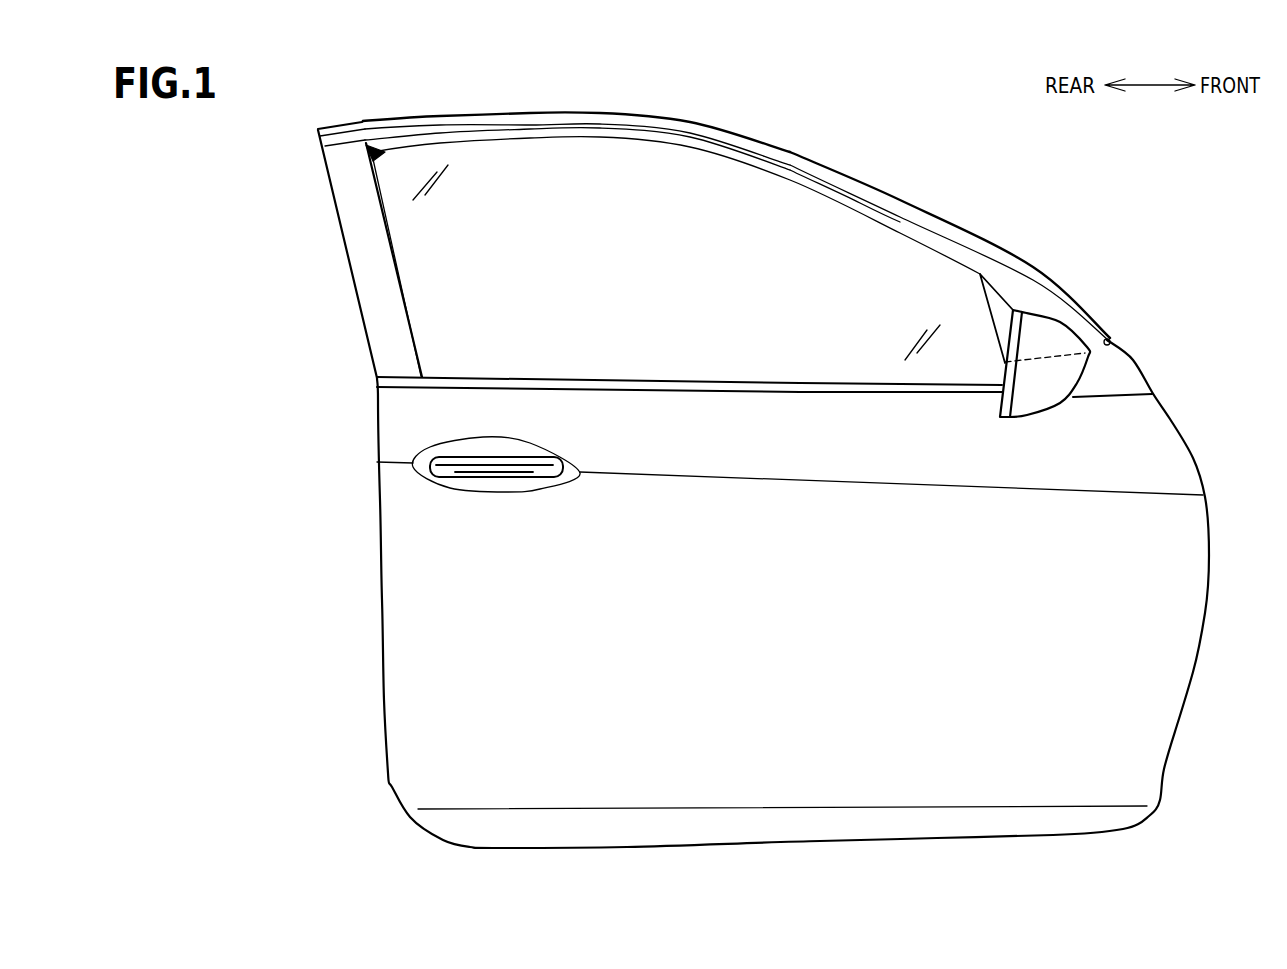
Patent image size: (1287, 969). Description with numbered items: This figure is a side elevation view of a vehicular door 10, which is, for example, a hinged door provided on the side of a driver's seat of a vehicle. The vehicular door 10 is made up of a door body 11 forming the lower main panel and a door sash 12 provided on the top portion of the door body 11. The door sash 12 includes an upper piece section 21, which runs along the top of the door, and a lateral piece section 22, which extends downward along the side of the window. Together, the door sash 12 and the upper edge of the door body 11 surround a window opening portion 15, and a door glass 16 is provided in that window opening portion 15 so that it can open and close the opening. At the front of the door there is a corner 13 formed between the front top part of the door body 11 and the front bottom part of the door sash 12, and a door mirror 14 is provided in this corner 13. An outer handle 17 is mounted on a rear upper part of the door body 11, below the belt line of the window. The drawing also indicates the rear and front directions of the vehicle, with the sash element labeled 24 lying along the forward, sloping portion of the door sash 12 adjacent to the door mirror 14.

The vehicular door 10 is at (233, 241).
The door body 11 is at (360, 592).
The door sash 12 is at (1010, 247).
The corner 13 is at (954, 318).
The door mirror 14 is at (1092, 377).
The window opening portion 15 is at (403, 297).
The door glass 16 is at (732, 210).
The outer handle 17 is at (492, 475).
The upper piece section 21 is at (613, 115).
The lateral piece section 22 is at (362, 331).
The front sash 24 is at (922, 218).